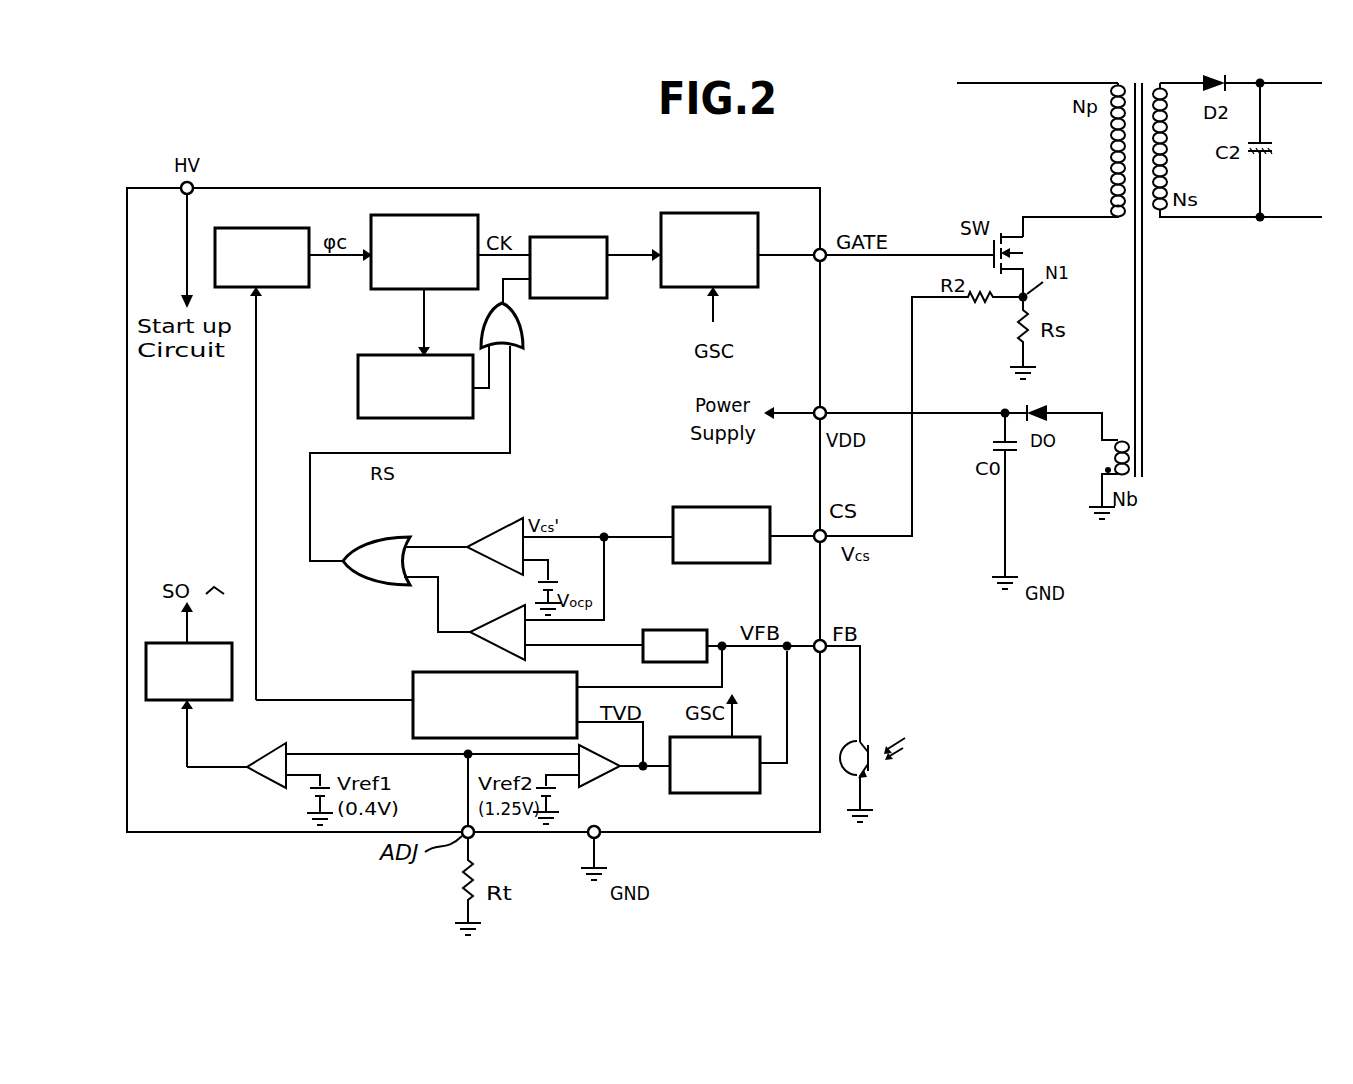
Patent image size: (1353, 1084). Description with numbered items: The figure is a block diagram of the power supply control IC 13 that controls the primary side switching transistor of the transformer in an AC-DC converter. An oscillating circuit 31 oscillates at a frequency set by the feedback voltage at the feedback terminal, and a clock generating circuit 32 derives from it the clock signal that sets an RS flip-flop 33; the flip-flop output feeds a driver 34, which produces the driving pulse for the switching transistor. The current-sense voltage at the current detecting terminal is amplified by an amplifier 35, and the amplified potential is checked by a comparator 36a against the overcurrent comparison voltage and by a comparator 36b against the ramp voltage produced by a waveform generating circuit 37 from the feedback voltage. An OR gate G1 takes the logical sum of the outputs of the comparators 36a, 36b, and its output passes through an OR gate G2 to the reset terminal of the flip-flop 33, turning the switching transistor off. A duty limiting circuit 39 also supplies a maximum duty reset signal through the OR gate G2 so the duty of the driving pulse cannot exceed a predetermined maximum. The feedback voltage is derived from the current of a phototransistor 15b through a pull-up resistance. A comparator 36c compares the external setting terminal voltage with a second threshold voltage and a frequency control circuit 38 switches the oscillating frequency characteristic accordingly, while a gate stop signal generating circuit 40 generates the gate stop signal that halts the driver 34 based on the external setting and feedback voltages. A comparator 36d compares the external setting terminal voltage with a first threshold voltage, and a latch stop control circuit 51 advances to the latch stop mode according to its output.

The power supply control IC 13 is at (355, 188).
The oscillating circuit 31 is at (304, 232).
The clock generating circuit 32 is at (398, 291).
The RS flip-flop 33 is at (596, 238).
The driver 34 is at (683, 288).
The amplifier 35 is at (686, 507).
The comparator 36a is at (500, 524).
The comparator 36b is at (506, 612).
The comparator 36c is at (602, 782).
The comparator 36d is at (256, 788).
The waveform generating circuit 37 is at (670, 630).
The frequency control circuit 38 is at (413, 722).
The duty limiting circuit 39 is at (358, 387).
The gate stop signal generating circuit 40 is at (725, 794).
The latch stop control circuit 51 is at (146, 674).
The phototransistor 15b is at (880, 777).
The OR gate G1 is at (362, 590).
The OR gate G2 is at (524, 333).